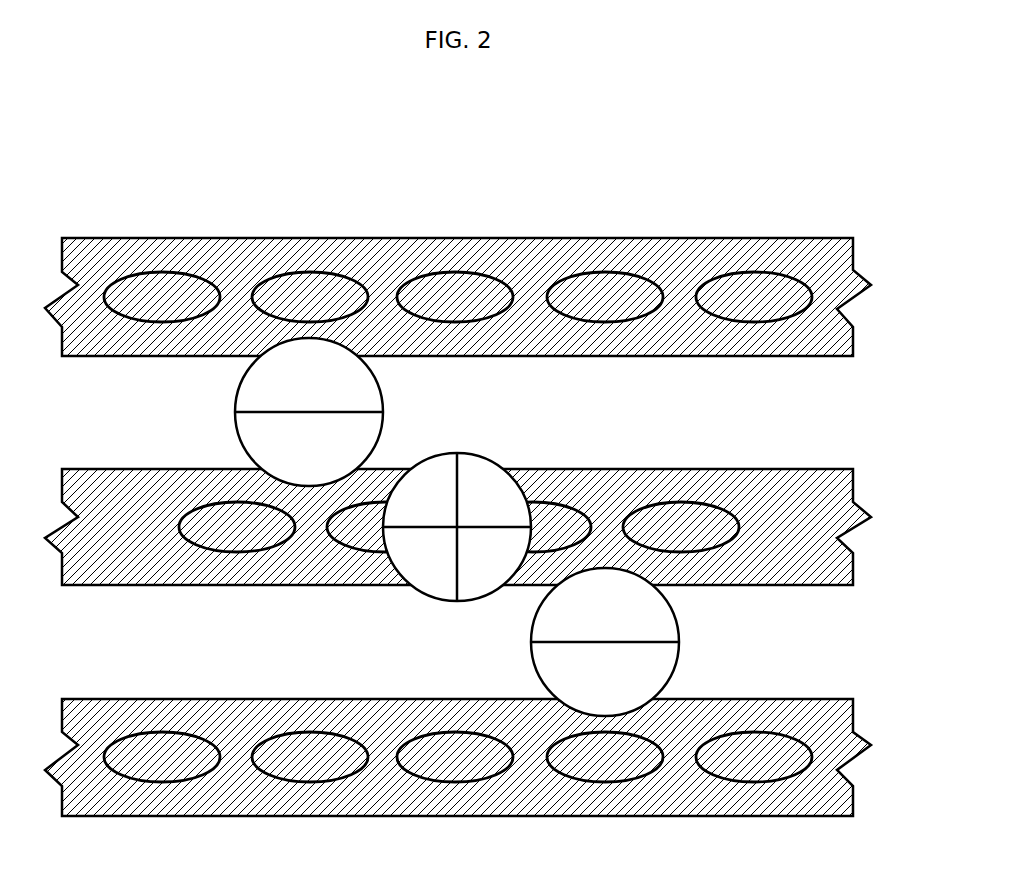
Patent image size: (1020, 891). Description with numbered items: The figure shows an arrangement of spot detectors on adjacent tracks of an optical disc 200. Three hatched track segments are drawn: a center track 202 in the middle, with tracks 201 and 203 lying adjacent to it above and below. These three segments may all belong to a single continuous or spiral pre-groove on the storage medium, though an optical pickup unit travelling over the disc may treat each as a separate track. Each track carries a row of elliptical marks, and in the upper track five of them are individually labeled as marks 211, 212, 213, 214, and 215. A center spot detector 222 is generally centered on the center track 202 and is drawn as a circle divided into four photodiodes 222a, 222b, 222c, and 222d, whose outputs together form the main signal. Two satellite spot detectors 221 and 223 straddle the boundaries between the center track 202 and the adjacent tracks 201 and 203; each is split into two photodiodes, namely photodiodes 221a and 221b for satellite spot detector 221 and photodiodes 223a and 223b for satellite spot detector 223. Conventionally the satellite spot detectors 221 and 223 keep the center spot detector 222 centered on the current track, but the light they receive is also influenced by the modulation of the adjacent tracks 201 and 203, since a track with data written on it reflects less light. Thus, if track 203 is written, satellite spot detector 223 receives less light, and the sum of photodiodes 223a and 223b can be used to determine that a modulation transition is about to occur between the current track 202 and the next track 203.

The optical disc 200 is at (685, 132).
The track 201 is at (458, 296).
The center track 202 is at (818, 586).
The track 203 is at (818, 817).
The first opening 211 is at (138, 274).
The second opening 212 is at (290, 274).
The third opening 213 is at (440, 274).
The fourth opening 214 is at (590, 274).
The fifth opening 215 is at (742, 274).
The satellite spot detector 221 is at (338, 412).
The photodiode 221a is at (309, 375).
The photodiode 221b is at (309, 449).
The center spot detector 222 is at (464, 518).
The photodiode 222a is at (420, 490).
The photodiode 222b is at (494, 490).
The photodiode 222c is at (420, 564).
The photodiode 222d is at (494, 564).
The satellite spot detector 223 is at (634, 642).
The photodiode 223a is at (605, 605).
The photodiode 223b is at (605, 679).